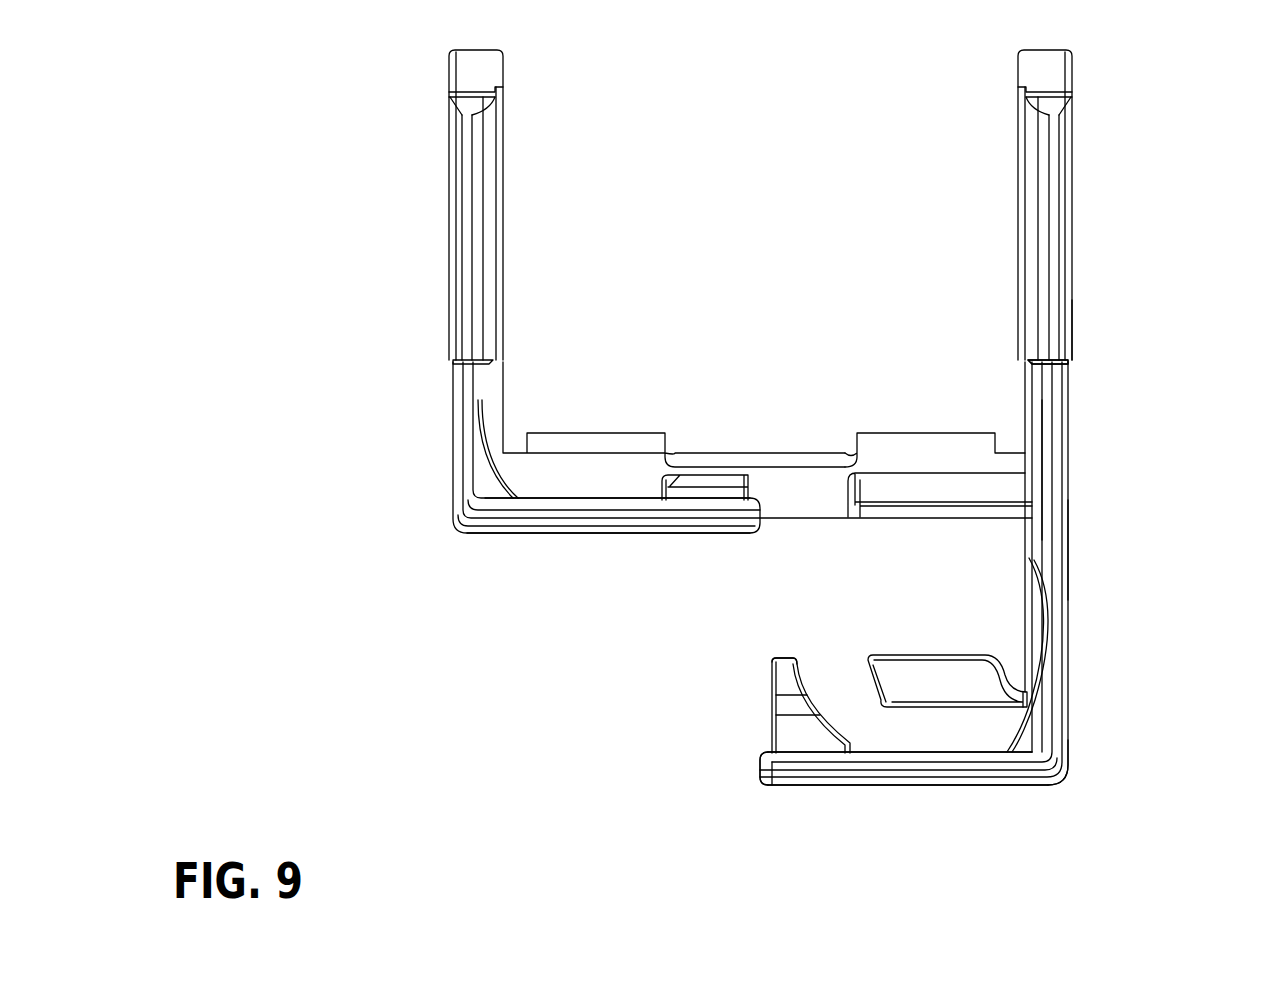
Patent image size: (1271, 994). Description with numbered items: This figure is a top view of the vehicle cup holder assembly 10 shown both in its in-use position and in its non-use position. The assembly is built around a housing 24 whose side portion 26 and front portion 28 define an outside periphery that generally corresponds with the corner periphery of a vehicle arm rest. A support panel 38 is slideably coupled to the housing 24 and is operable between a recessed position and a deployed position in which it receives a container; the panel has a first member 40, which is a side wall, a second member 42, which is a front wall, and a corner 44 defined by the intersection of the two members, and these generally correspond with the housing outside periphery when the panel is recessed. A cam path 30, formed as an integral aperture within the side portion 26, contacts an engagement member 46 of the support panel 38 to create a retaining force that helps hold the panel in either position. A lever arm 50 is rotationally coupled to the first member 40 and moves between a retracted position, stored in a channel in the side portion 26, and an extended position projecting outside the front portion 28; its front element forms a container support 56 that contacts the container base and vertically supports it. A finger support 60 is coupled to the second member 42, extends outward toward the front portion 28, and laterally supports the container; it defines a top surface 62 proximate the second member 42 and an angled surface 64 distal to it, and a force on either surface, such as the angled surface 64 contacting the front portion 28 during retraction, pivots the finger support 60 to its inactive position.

The vehicle cup holder assembly 10 is at (356, 554).
The housing 24 is at (452, 290).
The side portion 26 is at (1072, 357).
The front portion 28 is at (875, 510).
The cam path 30 is at (1068, 377).
The support panel 38 is at (542, 525).
The first member 40 is at (1066, 556).
The second member 42 is at (783, 785).
The corner 44 is at (1063, 775).
The engagement member 46 is at (1045, 470).
The lever arm 50 is at (1040, 643).
The container support 56 is at (975, 707).
The finger support 60 is at (767, 753).
The top surface 62 is at (773, 712).
The angled surface 64 is at (780, 658).